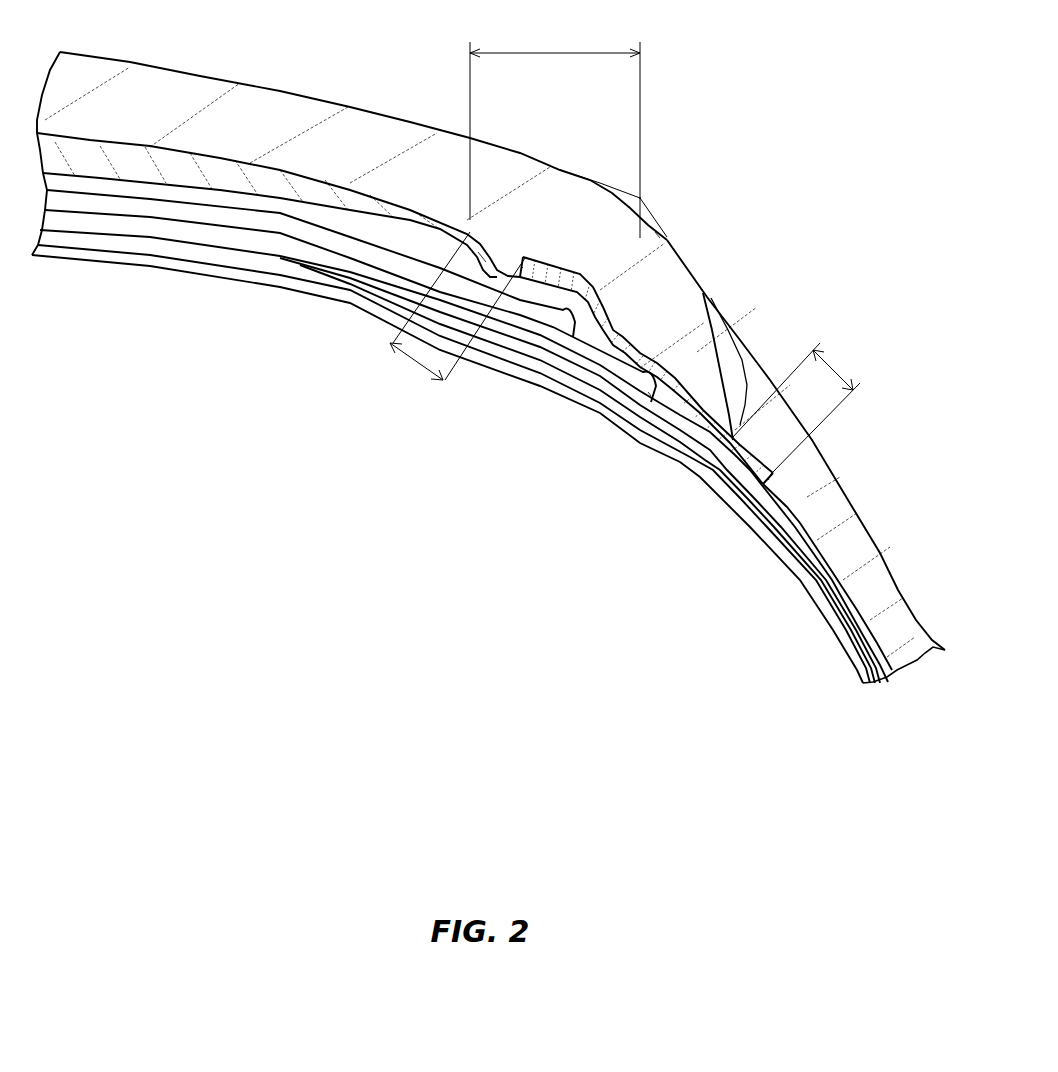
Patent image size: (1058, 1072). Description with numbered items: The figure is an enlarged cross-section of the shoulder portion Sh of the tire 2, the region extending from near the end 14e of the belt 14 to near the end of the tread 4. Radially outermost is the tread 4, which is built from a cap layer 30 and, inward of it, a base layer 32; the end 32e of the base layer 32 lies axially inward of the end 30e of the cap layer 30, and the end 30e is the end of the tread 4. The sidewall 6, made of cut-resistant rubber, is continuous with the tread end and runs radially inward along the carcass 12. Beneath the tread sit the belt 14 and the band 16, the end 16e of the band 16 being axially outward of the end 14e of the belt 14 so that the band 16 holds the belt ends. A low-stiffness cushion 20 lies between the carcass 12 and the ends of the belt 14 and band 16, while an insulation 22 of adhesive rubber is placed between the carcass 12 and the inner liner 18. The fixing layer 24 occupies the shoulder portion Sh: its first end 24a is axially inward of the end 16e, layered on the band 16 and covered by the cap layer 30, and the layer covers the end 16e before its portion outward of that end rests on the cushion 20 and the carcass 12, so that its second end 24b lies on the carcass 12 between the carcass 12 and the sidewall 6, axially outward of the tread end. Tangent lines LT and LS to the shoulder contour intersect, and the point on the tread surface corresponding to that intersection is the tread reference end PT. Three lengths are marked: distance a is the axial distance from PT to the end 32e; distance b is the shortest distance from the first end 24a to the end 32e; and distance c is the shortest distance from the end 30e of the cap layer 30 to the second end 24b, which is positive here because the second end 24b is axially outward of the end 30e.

The tire 2 is at (828, 165).
The tread 4 is at (160, 62).
The sidewall 6 is at (890, 580).
The carcass 12 is at (200, 262).
The belt 14 is at (147, 238).
The band 16 is at (200, 188).
The inner liner 18 is at (80, 262).
The cushion 20 is at (540, 335).
The insulation 22 is at (810, 572).
The fixing layer 24 is at (700, 450).
The first end of the fixing layer 24a is at (513, 267).
The second end of the fixing layer 24b is at (775, 478).
The cap layer 30 is at (283, 105).
The end of the cap layer 30e is at (748, 360).
The base layer 32 is at (90, 155).
The end of the base layer 32e is at (470, 226).
The end of the belt 14e is at (575, 340).
The end of the band 16e is at (651, 400).
The tangent line LT is at (612, 186).
The tangent line LS is at (675, 242).
The tread reference end PT is at (643, 202).
The shoulder portion Sh is at (662, 223).
The distance a is at (555, 132).
The distance b is at (457, 310).
The distance c is at (796, 409).